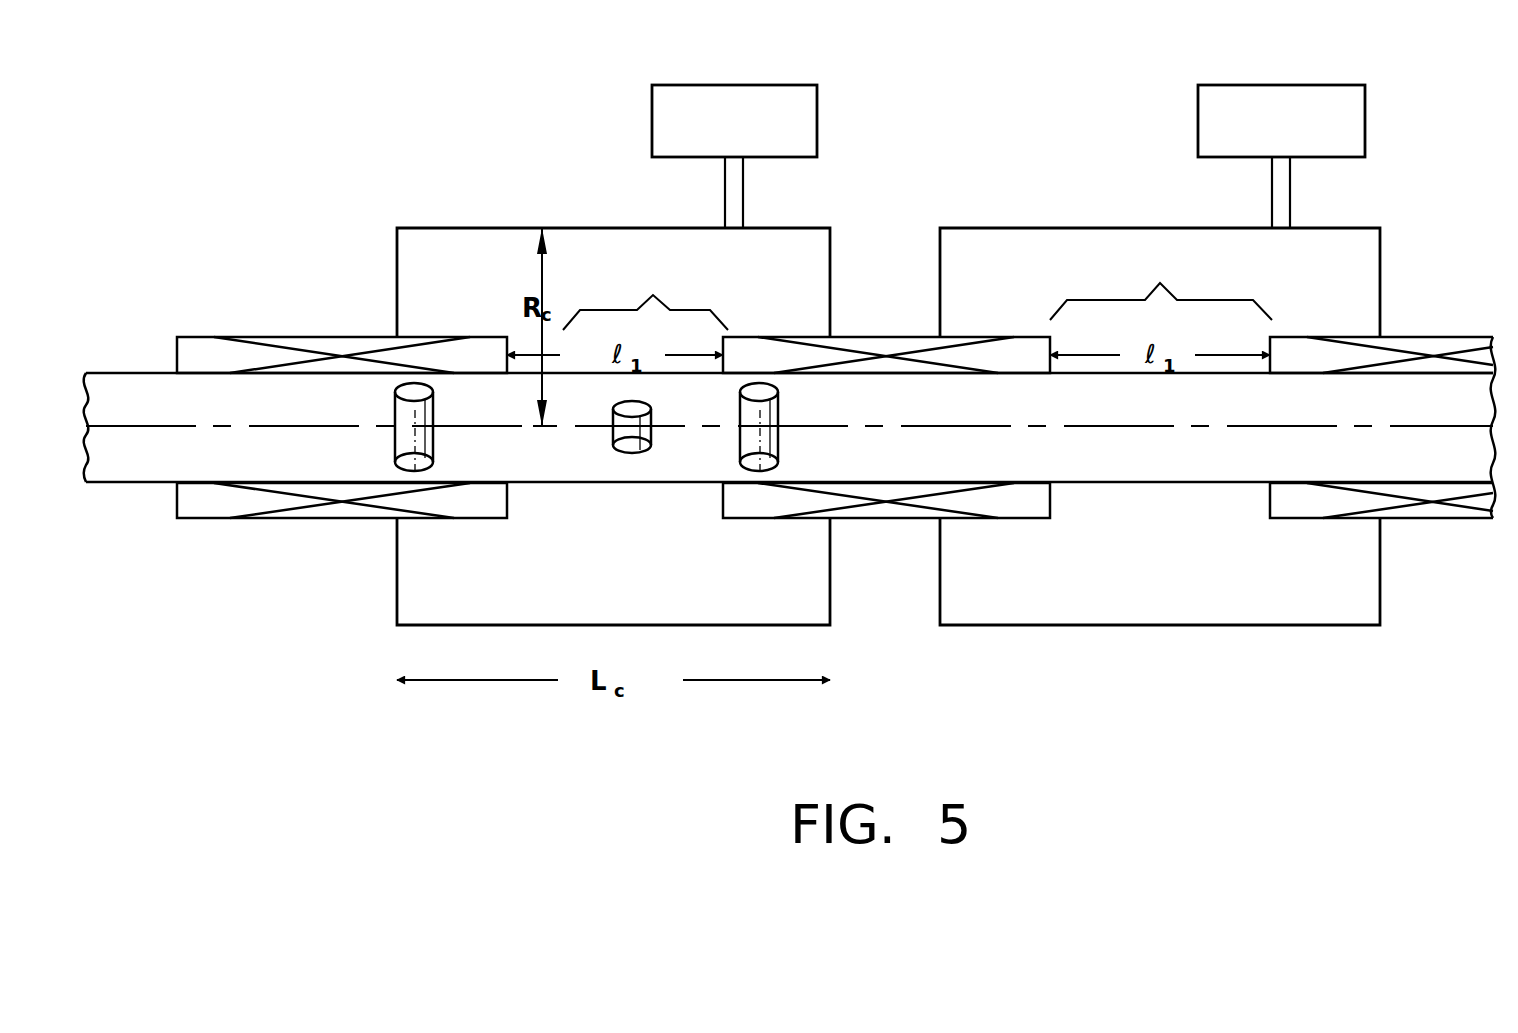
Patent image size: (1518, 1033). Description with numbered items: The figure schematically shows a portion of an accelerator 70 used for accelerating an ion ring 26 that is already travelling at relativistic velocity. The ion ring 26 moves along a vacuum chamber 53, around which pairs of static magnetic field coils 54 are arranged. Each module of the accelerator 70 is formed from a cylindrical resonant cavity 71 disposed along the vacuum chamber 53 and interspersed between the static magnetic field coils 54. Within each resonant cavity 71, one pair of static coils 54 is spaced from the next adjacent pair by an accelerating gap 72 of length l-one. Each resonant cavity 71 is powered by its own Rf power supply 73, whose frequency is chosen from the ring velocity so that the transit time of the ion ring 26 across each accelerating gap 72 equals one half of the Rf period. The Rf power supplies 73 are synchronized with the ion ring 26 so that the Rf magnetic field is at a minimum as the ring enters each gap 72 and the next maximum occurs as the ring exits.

The ion ring 26 is at (628, 455).
The vacuum chamber 53 is at (138, 485).
The static magnetic field coils 54 is at (305, 337).
The accelerator 70 is at (1280, 695).
The cylindrical resonant cavity 71 is at (805, 248).
The accelerating gap 72 is at (917, 290).
The Rf power supply 73 is at (798, 115).